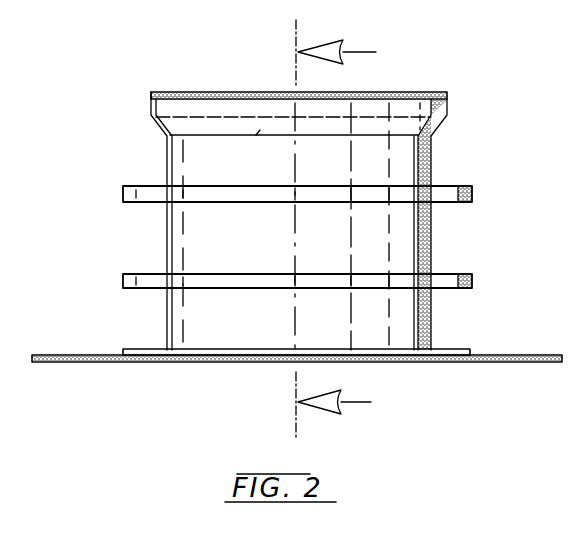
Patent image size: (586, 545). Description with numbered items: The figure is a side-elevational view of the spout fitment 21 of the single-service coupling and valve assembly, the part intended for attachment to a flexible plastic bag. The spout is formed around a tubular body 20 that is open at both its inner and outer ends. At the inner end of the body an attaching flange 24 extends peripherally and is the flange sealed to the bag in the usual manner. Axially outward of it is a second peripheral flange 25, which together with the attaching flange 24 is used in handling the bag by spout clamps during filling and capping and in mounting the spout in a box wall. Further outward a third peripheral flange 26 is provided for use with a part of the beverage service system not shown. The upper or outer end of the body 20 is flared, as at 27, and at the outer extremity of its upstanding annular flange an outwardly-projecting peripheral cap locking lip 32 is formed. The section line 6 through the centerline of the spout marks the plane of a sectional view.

The section line 6- 6 is at (323, 229).
The tubular body 20 is at (398, 246).
The spout fitment 21 is at (164, 233).
The attaching flange 24 is at (78, 354).
The second peripheral flange 25 is at (473, 283).
The third peripheral flange 26 is at (473, 190).
The flared end 27 is at (447, 108).
The cap locking lip 32 is at (150, 97).